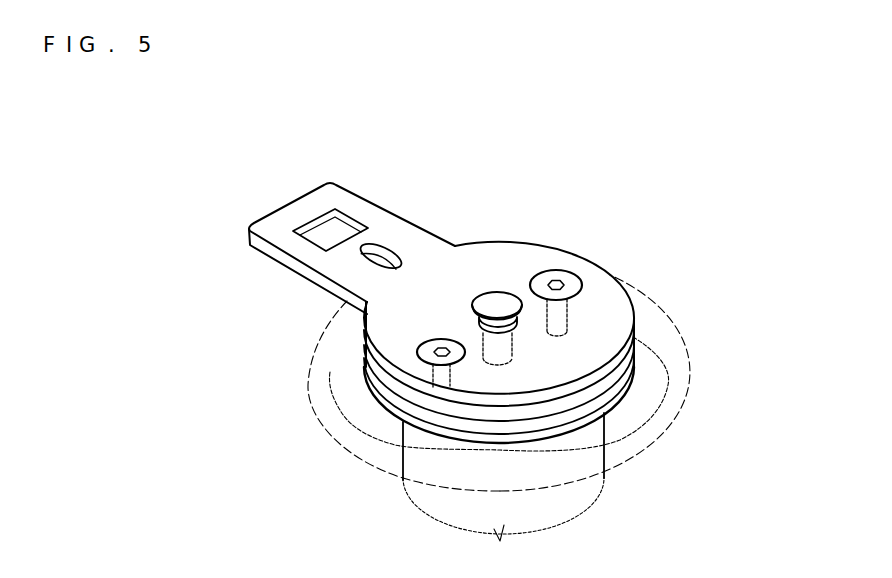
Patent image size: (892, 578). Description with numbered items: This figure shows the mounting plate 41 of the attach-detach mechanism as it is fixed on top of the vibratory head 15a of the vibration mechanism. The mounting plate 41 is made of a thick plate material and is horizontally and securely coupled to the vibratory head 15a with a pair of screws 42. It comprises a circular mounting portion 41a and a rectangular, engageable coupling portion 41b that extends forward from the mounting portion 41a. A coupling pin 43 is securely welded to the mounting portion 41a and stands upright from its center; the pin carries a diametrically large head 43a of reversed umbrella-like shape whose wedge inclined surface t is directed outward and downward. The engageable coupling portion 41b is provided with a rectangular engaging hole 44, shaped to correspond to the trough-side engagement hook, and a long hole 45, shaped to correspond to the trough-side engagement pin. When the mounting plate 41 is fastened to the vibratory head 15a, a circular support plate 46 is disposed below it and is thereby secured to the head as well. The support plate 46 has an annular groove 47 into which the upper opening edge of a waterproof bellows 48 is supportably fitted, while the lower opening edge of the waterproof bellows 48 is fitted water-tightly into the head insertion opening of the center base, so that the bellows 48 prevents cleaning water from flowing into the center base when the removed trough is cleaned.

The mounting plate 41 is at (539, 243).
The circular mounting portion 41a is at (602, 273).
The engageable coupling portion 41b is at (375, 210).
The screws 42 is at (560, 271).
The coupling pin 43 is at (499, 286).
The diametrically large head 43a is at (520, 310).
The rectangular engaging hole 44 is at (328, 230).
The long hole 45 is at (396, 251).
The support plate 46 is at (466, 434).
The annular groove 47 is at (345, 445).
The waterproof bellows 48 is at (678, 322).
The vibratory head 15a is at (645, 450).
The wedge inclined surface t is at (480, 324).